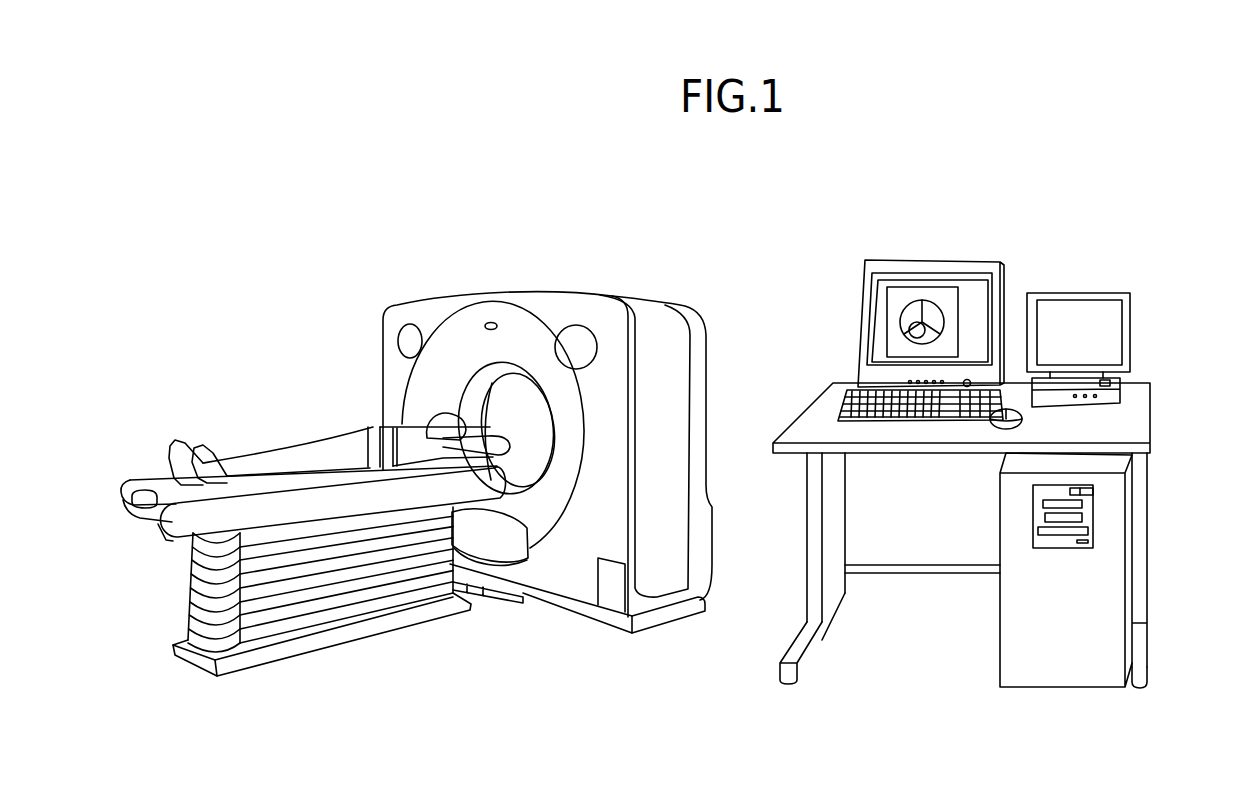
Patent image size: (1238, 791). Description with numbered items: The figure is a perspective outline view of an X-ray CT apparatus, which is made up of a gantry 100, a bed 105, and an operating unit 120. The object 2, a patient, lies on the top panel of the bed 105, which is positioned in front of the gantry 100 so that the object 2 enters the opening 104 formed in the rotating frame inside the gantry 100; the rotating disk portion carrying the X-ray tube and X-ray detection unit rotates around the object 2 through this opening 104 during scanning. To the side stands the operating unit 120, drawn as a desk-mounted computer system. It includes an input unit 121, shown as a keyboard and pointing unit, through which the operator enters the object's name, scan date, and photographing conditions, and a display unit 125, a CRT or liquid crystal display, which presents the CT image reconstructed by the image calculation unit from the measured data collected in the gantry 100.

The object 2 is at (285, 450).
The gantry 100 is at (541, 416).
The opening 104 is at (532, 413).
The bed 105 is at (165, 541).
The operating unit 120 is at (1120, 548).
The input unit 121 is at (853, 384).
The display unit 125 is at (909, 265).